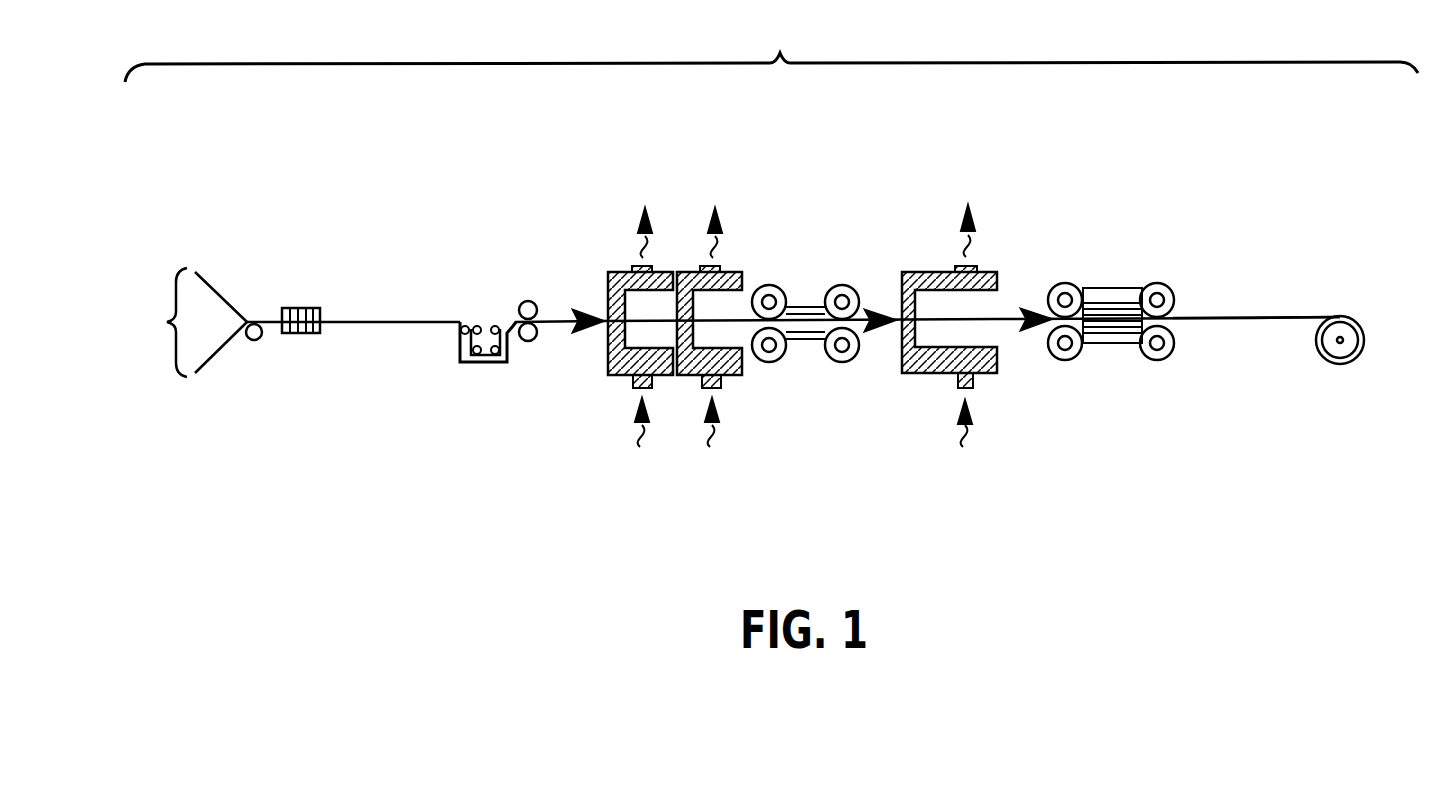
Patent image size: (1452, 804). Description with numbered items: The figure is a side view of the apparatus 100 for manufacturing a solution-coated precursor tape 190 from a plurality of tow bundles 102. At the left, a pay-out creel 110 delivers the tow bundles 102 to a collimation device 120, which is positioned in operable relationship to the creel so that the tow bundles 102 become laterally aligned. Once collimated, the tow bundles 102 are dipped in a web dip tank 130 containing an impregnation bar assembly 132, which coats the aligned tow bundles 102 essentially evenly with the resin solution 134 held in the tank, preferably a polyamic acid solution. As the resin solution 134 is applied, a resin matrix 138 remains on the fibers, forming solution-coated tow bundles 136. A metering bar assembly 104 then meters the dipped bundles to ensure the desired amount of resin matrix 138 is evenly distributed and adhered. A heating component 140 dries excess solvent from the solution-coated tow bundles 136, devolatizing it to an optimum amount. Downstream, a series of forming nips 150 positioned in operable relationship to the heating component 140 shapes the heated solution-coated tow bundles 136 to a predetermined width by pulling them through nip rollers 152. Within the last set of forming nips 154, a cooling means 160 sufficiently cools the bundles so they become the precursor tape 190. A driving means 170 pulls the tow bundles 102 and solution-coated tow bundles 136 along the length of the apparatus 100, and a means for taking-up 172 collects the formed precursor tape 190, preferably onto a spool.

The apparatus 100 is at (771, 48).
The tow bundles 102 is at (247, 328).
The metering bar assembly 104 is at (793, 228).
The pay-out creel 110 is at (210, 328).
The collimation device 120 is at (347, 276).
The web dip tank 130 is at (408, 402).
The impregnation bar assembly 132 is at (390, 404).
The resin solution 134 is at (399, 404).
The solution-coated tow bundles 136 is at (563, 138).
The resin matrix 138 is at (563, 138).
The heating component 140 is at (740, 448).
The forming nips 150 is at (1007, 362).
The nip rollers 152 is at (862, 257).
The last set of forming nips 154 is at (1156, 334).
The cooling means 160 is at (1197, 401).
The driving means 170 is at (1202, 260).
The means for taking-up 172 is at (1379, 298).
The solution-coated precursor tape 190 is at (1258, 273).